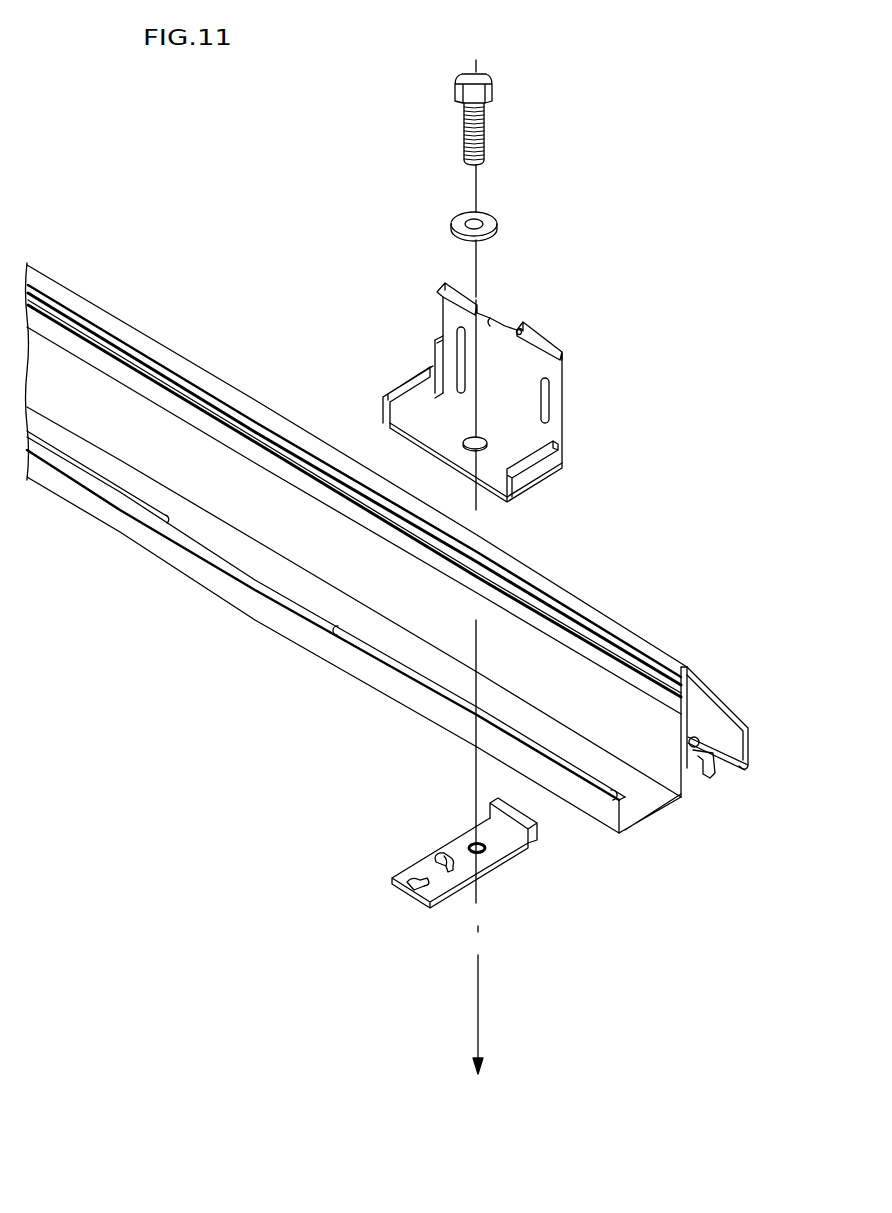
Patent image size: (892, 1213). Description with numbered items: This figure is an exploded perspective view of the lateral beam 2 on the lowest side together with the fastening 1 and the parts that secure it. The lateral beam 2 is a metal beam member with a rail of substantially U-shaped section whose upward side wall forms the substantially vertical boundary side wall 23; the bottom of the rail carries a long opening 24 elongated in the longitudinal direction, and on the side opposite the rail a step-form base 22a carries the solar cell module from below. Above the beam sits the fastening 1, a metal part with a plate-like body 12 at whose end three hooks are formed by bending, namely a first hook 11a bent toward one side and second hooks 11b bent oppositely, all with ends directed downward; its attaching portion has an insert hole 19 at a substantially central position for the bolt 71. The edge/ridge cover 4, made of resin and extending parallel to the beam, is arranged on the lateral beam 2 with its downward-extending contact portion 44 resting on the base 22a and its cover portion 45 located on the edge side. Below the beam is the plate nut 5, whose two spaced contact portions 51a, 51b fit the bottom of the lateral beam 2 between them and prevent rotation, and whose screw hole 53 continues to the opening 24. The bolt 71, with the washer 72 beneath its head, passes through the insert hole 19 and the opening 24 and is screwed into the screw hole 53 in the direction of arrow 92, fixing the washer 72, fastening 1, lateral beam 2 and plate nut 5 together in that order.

The fastening 1 is at (522, 376).
The hook 11a is at (508, 322).
The hook 11b is at (463, 300).
The body 12 is at (520, 368).
The insert hole 19 is at (540, 417).
The lateral beam 2 is at (399, 567).
The edge/ridge cover 4 is at (643, 642).
The boundary side wall 23 is at (636, 740).
The opening 24 is at (380, 650).
The contact portion 44 is at (688, 718).
The cover portion 45 is at (700, 677).
The base 22a is at (710, 757).
The plate nut 5 is at (457, 870).
The contact portion 51a is at (527, 828).
The contact portion 51b is at (438, 870).
The screw hole 53 is at (473, 845).
The bolt 71 is at (480, 80).
The washer 72 is at (490, 223).
The arrow 92 is at (478, 992).